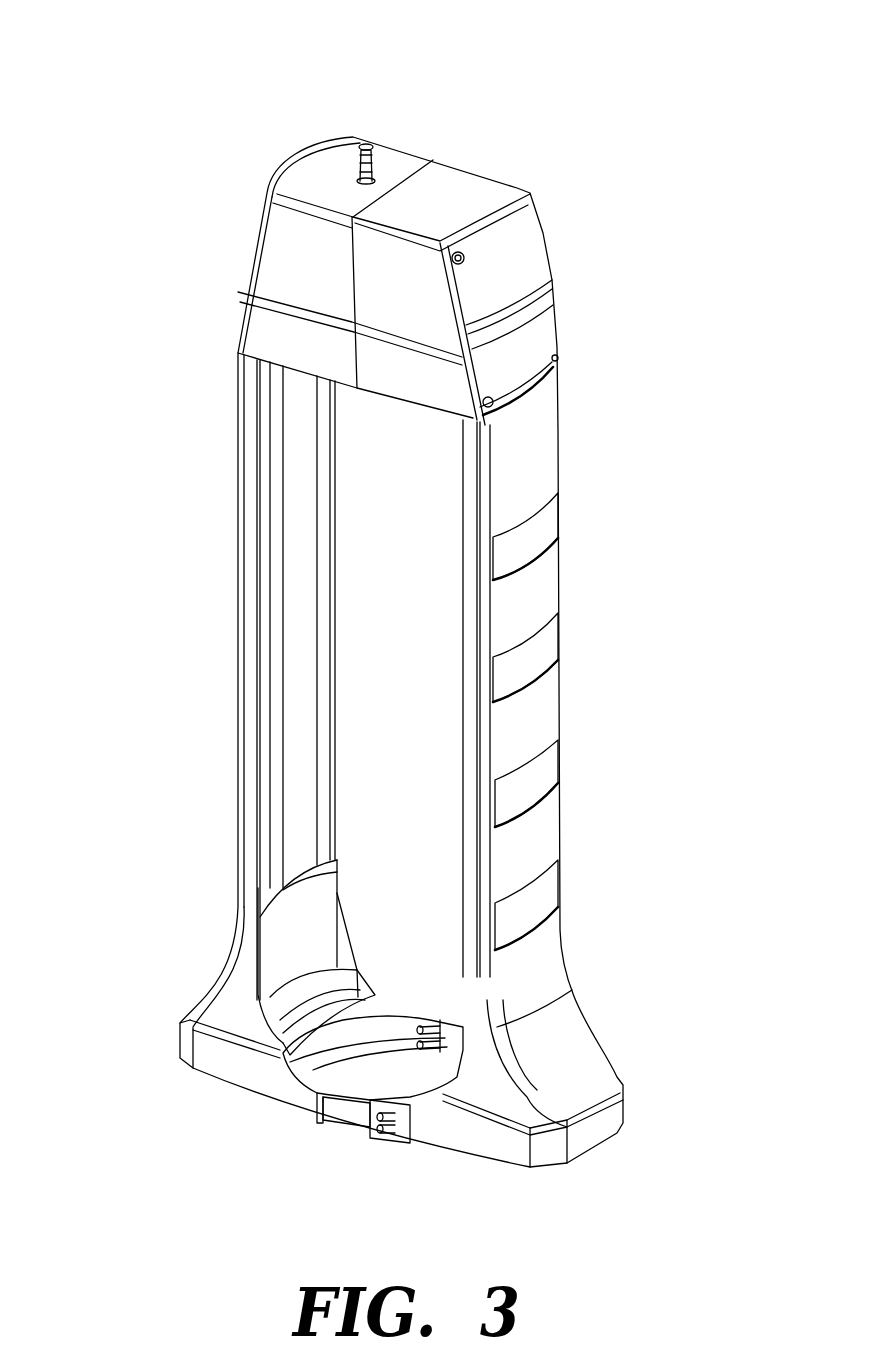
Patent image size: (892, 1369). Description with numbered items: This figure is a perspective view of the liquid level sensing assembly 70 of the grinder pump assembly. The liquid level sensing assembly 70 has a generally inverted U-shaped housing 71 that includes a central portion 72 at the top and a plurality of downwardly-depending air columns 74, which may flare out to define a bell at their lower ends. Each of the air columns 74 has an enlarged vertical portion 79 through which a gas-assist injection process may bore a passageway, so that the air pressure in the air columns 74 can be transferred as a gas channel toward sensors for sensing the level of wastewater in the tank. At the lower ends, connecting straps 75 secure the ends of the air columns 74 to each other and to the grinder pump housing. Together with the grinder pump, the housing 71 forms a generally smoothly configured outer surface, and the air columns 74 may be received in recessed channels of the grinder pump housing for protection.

The liquid level sensing assembly 70 is at (220, 93).
The housing 71 is at (285, 257).
The central portion 72 is at (458, 183).
The air columns 74 is at (223, 995).
The connecting straps 75 is at (452, 1027).
The enlarged vertical portion 79 is at (278, 617).